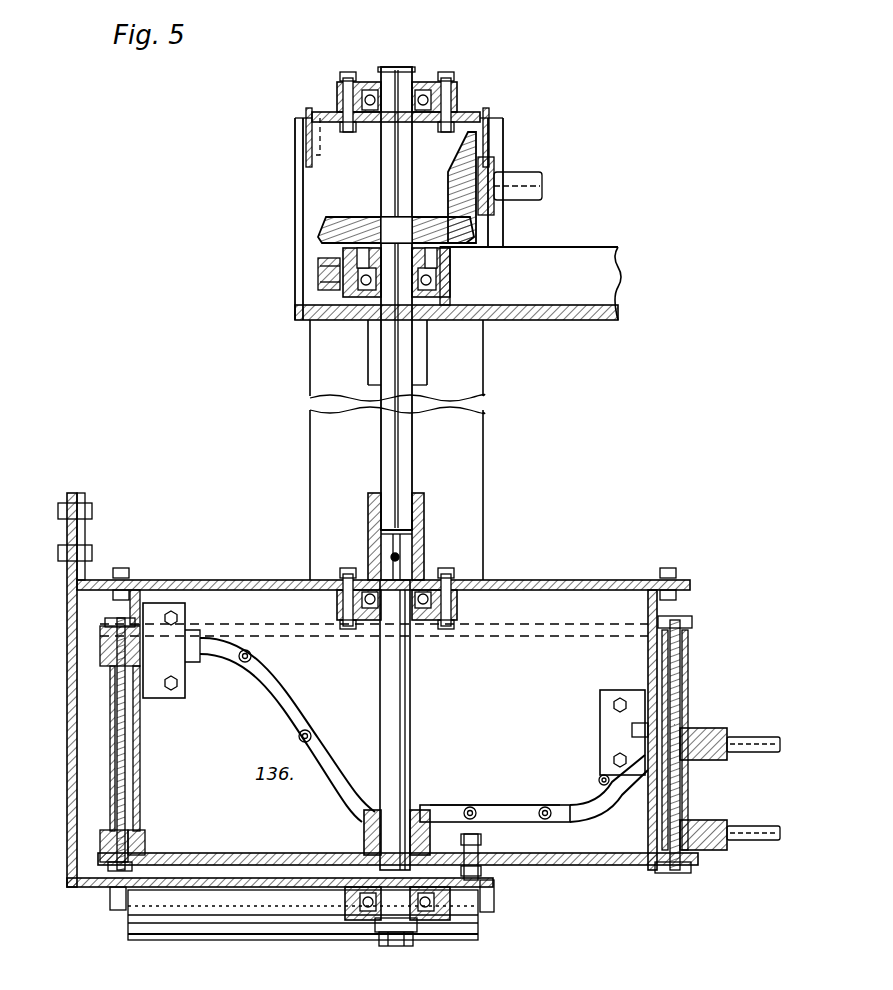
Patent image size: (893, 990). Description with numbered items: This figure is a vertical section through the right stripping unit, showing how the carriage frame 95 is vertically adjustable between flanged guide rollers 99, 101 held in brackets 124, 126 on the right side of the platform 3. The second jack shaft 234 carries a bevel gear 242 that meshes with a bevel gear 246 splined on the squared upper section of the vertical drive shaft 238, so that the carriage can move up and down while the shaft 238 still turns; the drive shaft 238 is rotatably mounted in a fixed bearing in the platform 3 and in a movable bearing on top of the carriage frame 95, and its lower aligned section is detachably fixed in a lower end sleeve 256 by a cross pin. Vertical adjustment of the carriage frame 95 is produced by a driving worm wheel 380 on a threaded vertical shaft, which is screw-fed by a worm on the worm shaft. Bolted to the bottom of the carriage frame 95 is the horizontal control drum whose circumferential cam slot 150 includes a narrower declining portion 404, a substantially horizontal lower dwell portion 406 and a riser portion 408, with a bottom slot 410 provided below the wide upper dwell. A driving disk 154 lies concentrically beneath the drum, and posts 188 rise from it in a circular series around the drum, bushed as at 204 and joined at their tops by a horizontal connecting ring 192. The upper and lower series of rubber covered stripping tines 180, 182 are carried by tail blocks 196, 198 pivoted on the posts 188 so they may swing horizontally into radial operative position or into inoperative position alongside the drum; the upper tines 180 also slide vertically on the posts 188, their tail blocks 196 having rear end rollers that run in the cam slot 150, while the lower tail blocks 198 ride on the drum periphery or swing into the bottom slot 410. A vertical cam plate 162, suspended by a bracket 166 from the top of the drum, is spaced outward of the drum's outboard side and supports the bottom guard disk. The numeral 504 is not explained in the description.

The platform 3 is at (600, 322).
The carriage frame 95 is at (316, 438).
The guide roller 99 is at (309, 110).
The guide roller 101 is at (304, 264).
The bracket 124 is at (504, 160).
The bracket 126 is at (300, 191).
The cam slot 150 is at (497, 805).
The driving disk 154 is at (610, 866).
The cam plate 162 is at (67, 700).
The bracket 166 is at (86, 553).
The upper stripping tine 180 is at (755, 740).
The lower stripping tine 182 is at (752, 827).
The post 188 is at (118, 770).
The connecting ring 192 is at (102, 640).
The tail block 196 is at (705, 728).
The tail block 198 is at (97, 838).
The rear end roller 204 is at (632, 729).
The second jack shaft 234 is at (408, 730).
The drive shaft 238 is at (389, 457).
The bevel gear 242 is at (478, 222).
The bevel gear 246 is at (342, 226).
The lower end sleeve 256 is at (422, 527).
The driving worm wheel 380 is at (321, 281).
The declining portion of cam slot 404 is at (592, 800).
The lower dwell portion of cam slot 406 is at (520, 822).
The riser portion of cam slot 408 is at (296, 714).
The bottom slot 410 is at (140, 833).
The nut 504 is at (112, 898).